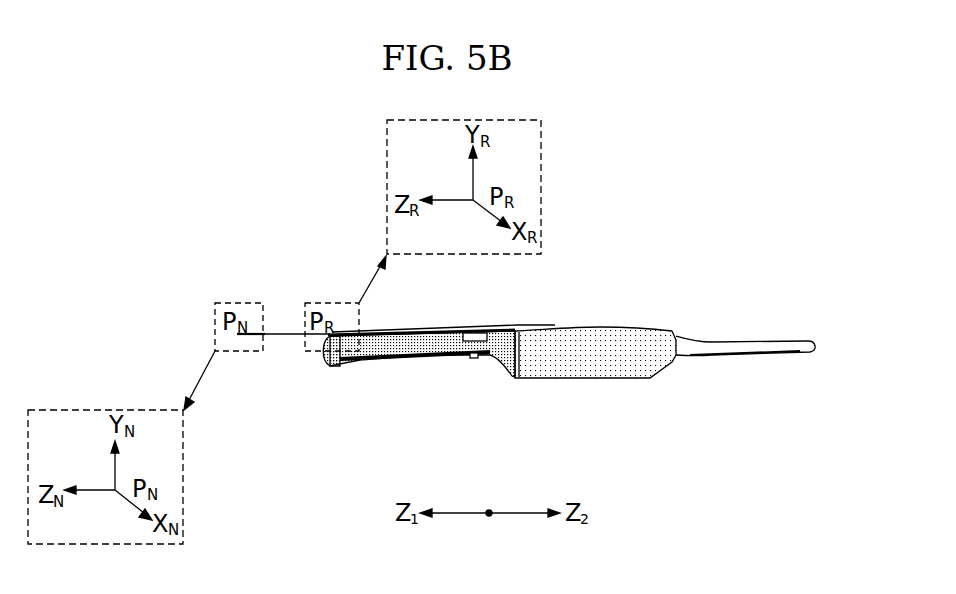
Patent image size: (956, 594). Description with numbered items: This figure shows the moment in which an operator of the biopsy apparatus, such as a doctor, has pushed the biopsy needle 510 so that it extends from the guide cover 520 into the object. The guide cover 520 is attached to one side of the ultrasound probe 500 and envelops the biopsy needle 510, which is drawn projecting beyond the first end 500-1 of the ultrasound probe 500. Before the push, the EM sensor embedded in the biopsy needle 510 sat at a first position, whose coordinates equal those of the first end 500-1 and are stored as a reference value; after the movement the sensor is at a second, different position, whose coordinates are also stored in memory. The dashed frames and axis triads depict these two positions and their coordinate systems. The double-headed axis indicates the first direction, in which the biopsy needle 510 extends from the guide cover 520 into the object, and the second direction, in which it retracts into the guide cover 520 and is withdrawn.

The ultrasound probe 500 is at (597, 330).
The first end of the ultrasound probe 500-1 is at (322, 361).
The biopsy needle 510 is at (290, 333).
The guide cover 520 is at (440, 330).